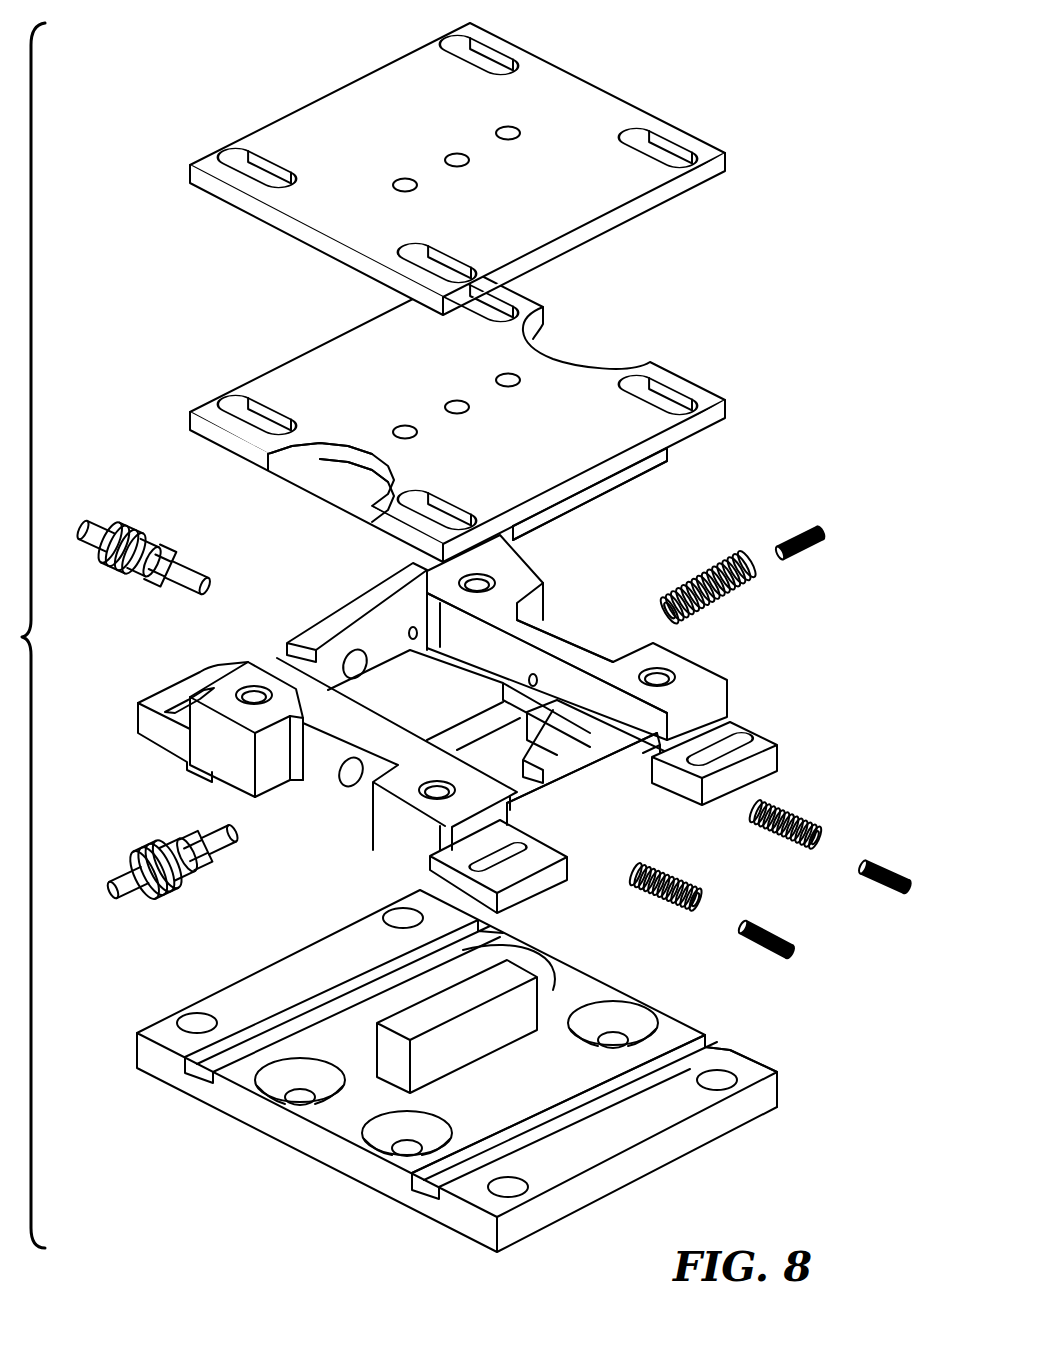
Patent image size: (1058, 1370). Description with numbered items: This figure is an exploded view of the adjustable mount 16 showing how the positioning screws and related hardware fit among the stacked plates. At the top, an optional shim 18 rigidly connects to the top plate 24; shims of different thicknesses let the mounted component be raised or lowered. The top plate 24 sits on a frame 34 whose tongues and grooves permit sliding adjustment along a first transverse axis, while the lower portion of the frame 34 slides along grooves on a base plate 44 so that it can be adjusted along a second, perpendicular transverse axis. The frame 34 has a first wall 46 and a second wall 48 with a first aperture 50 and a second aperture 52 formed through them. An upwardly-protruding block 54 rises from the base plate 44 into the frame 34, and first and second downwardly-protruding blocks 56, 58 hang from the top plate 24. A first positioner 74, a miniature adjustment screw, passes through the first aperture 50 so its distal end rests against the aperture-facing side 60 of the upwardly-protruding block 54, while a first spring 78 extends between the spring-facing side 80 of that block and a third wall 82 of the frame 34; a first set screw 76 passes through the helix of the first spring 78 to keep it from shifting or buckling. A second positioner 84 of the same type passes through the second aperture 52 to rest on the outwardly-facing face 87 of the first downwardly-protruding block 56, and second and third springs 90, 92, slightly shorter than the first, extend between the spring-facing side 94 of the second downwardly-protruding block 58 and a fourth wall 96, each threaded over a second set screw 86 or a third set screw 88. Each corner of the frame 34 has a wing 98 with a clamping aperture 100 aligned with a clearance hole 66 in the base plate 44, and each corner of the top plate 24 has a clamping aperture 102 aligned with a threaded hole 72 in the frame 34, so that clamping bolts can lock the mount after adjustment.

The adjustable mount 16 is at (753, 71).
The shim 18 is at (303, 223).
The top plate 24 is at (300, 387).
The frame 34 is at (421, 724).
The base plate 44 is at (466, 1086).
The first wall 46 is at (325, 766).
The second wall 48 is at (300, 631).
The first aperture 50 is at (340, 776).
The second aperture 52 is at (368, 670).
The upwardly-protruding block 54 is at (403, 1022).
The first downwardly-protruding block 56 is at (322, 488).
The second downwardly-protruding block 58 is at (570, 500).
The aperture-facing side 60 is at (390, 1077).
The clearance holes 66 is at (770, 1090).
The threaded holes 72 is at (680, 666).
The first positioner 74 is at (155, 906).
The first set screw 76 is at (814, 528).
The first spring 78 is at (730, 590).
The spring-facing side 80 is at (555, 992).
The third wall 82 is at (580, 640).
The second positioner 84 is at (88, 546).
The second set screw 86 is at (902, 893).
The outwardly-facing face 87 is at (290, 470).
The third set screw 88 is at (795, 952).
The second spring 90 is at (820, 836).
The third spring 92 is at (646, 896).
The spring-facing side 94 is at (570, 518).
The fourth wall 96 is at (620, 806).
The wing 98 is at (749, 755).
The clamping aperture 100 is at (740, 745).
The clamping aperture 102 is at (670, 395).